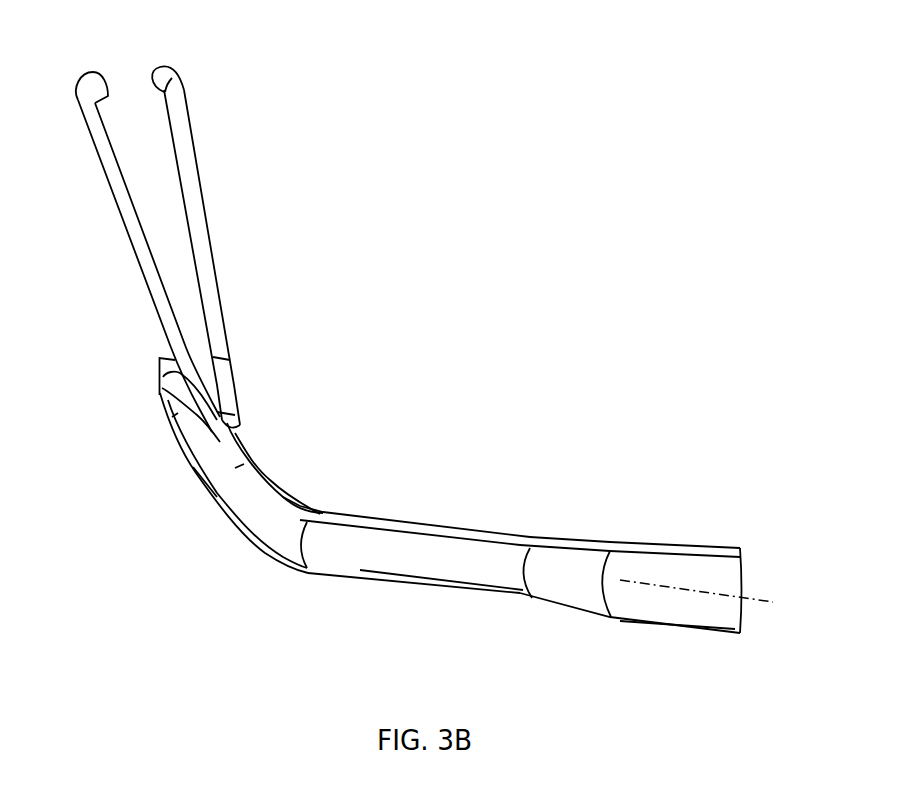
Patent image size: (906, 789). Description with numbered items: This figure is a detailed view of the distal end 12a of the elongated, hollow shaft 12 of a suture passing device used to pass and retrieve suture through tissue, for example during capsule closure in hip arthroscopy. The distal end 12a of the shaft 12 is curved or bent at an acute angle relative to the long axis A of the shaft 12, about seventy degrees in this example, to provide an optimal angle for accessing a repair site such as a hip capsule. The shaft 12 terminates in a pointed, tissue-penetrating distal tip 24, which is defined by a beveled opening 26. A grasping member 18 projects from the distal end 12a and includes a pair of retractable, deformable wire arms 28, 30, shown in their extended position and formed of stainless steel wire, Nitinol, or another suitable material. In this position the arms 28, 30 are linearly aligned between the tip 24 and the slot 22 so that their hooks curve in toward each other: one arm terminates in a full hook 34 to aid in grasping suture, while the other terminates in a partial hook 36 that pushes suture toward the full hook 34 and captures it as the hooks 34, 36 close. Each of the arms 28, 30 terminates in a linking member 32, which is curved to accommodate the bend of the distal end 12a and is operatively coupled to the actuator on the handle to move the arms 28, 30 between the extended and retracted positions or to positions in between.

The shaft 12 is at (702, 565).
The distal end 12a is at (541, 358).
The grasping member 18 is at (212, 181).
The slot 22 is at (455, 535).
The distal tip 24 is at (159, 358).
The beveled opening 26 is at (173, 383).
The wire arm 28 is at (125, 220).
The wire arm 30 is at (206, 297).
The linking member 32 is at (257, 477).
The full hook 34 is at (78, 84).
The partial hook 36 is at (167, 72).
The long axis A is at (760, 601).